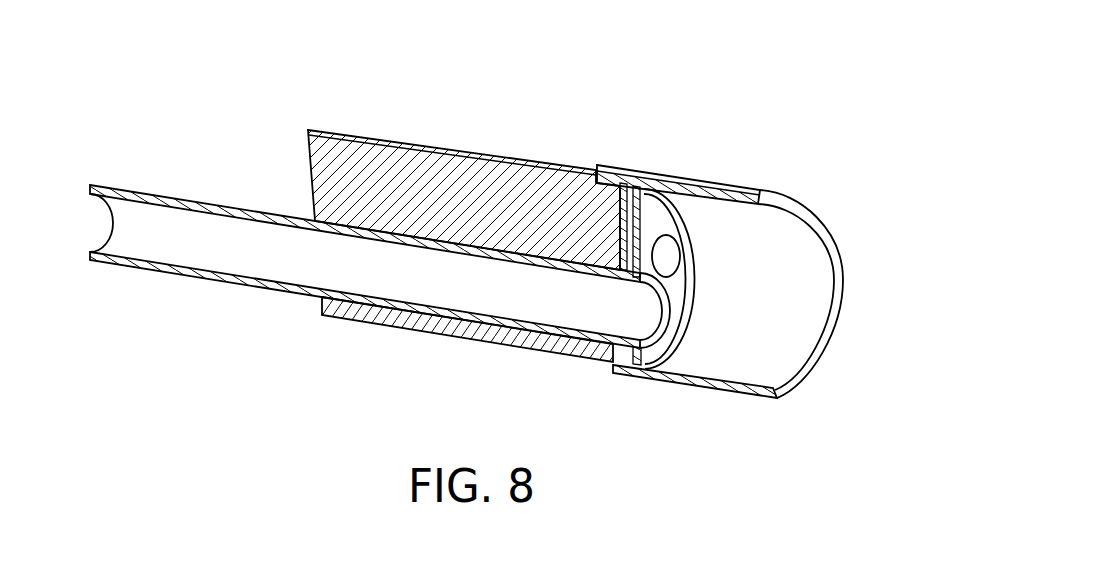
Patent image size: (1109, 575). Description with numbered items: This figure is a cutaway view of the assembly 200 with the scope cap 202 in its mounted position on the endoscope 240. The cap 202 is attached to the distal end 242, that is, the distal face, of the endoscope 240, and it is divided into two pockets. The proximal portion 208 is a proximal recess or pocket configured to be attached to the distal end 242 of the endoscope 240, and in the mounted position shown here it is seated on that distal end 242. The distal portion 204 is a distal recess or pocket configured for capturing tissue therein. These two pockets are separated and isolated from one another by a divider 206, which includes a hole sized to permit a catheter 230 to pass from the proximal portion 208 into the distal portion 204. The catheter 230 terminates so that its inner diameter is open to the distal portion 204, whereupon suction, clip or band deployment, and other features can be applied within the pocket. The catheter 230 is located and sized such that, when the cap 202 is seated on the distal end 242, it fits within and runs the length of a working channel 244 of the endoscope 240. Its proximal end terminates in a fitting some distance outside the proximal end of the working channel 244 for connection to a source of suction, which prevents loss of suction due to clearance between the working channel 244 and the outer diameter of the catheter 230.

The assembly 200 is at (823, 92).
The scope cap 202 is at (753, 231).
The distal portion 204 is at (782, 257).
The divider 206 is at (677, 297).
The proximal portion 208 is at (600, 158).
The catheter 230 is at (615, 323).
The endoscope 240 is at (418, 140).
The distal end 242 is at (648, 253).
The working channel 244 is at (403, 315).